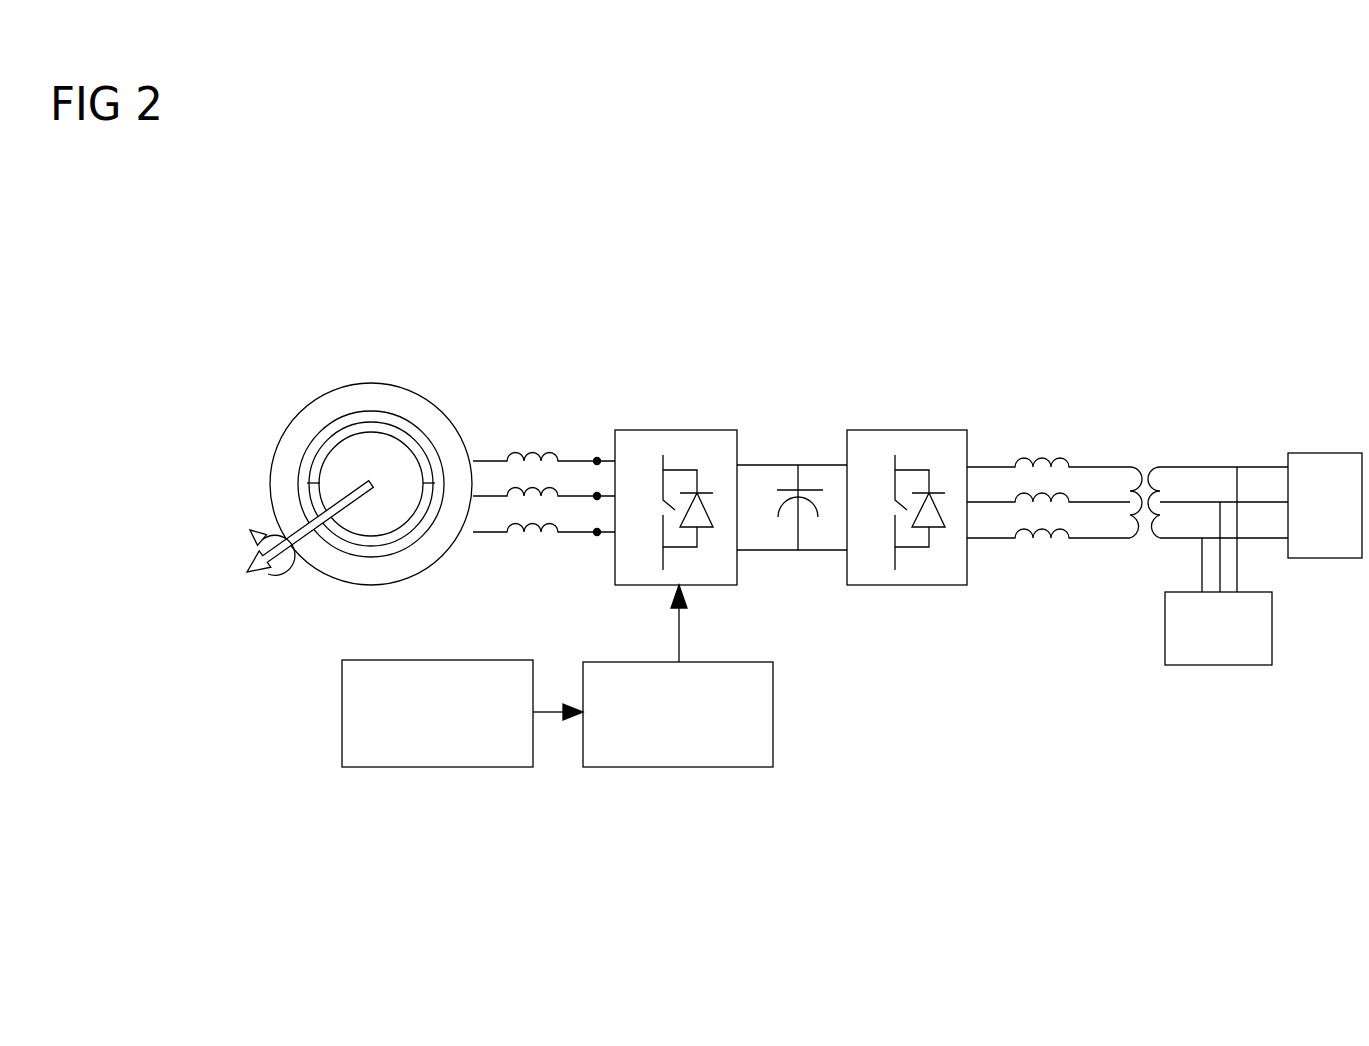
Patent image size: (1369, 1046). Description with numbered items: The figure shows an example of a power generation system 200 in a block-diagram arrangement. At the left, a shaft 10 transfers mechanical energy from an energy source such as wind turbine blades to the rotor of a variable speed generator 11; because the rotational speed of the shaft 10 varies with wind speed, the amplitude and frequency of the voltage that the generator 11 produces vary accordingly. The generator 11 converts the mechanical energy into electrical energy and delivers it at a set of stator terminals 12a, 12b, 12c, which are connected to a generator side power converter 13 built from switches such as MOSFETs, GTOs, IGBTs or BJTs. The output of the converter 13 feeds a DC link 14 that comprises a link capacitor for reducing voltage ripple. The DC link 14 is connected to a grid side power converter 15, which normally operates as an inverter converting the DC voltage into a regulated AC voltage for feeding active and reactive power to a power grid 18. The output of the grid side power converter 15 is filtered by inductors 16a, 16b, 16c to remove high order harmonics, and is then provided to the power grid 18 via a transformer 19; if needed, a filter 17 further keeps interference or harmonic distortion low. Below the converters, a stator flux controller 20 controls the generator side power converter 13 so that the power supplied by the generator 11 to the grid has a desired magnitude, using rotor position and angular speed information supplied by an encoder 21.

The power generation system 200 is at (1195, 218).
The shaft 10 is at (257, 575).
The variable speed generator 11 is at (302, 412).
The stator terminal 12a is at (597, 461).
The stator terminal 12b is at (597, 496).
The stator terminal 12c is at (597, 532).
The generator side power converter 13 is at (692, 445).
The DC link 14 is at (793, 448).
The grid side power converter 15 is at (920, 448).
The inductor 16a is at (1040, 467).
The inductor 16b is at (1048, 502).
The inductor 16c is at (1055, 538).
The filter 17 is at (1203, 647).
The power grid 18 is at (1327, 467).
The transformer 19 is at (1148, 477).
The stator flux controller 20 is at (713, 767).
The encoder 21 is at (445, 767).